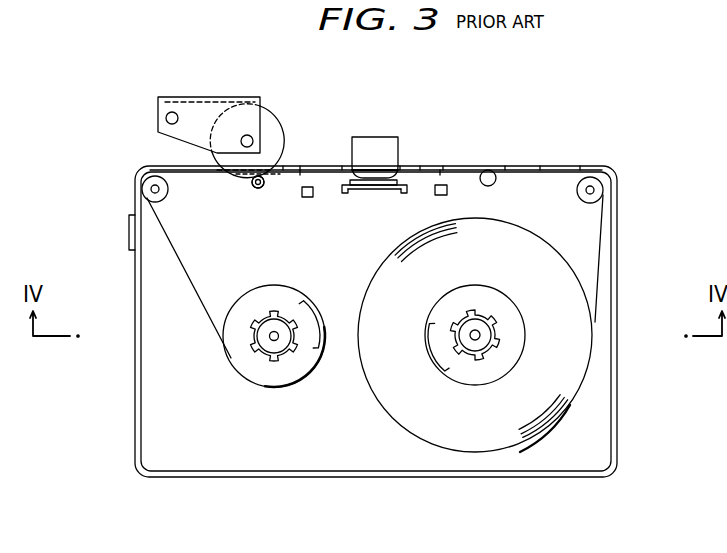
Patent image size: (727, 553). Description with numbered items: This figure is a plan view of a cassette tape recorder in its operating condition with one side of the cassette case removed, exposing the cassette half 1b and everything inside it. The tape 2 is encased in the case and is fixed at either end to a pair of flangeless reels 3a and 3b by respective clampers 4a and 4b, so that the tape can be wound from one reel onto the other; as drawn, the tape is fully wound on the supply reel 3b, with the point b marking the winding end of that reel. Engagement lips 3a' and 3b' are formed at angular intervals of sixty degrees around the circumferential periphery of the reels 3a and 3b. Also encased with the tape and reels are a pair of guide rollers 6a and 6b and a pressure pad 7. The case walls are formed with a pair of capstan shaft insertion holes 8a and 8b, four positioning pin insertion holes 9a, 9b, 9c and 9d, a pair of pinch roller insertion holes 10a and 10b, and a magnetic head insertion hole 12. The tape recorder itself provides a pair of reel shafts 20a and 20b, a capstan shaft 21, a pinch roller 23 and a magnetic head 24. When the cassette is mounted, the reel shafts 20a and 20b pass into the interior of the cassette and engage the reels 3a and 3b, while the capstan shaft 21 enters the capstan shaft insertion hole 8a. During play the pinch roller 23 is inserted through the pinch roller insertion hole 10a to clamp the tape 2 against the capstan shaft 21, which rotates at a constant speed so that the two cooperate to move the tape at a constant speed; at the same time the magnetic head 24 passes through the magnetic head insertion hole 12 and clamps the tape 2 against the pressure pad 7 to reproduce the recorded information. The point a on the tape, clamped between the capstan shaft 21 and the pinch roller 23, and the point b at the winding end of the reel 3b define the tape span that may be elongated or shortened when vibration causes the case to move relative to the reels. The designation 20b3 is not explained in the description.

The tape 2 is at (557, 173).
The cassette half 1b is at (135, 297).
The pinch roller insertion hole 10a is at (281, 167).
The pinch roller insertion hole 10b is at (507, 167).
The magnetic head insertion hole 12 is at (407, 165).
The guide roller 6a is at (143, 187).
The guide roller 6b is at (600, 181).
The pinch roller 23 is at (272, 127).
The capstan shaft 21 is at (256, 189).
The capstan shaft insertion hole 8a is at (250, 184).
The capstan shaft insertion hole 8b is at (493, 185).
The point on the tape a is at (247, 181).
The positioning pin insertion hole 9a is at (308, 198).
The positioning pin insertion hole 9b is at (446, 196).
The positioning pin insertion hole 9c is at (302, 172).
The positioning pin insertion hole 9d is at (438, 182).
The magnetic head 24 is at (377, 137).
The pressure pad 7 is at (372, 189).
The reel 3a is at (274, 359).
The reel shaft 20a is at (284, 312).
The engagement lips 3a' is at (212, 355).
The clamper 4a is at (311, 305).
The supply reel 3b is at (470, 335).
The reel shaft 20b is at (482, 335).
The reel hub engaging portion 20b3 is at (494, 311).
The engagement lips 3b' is at (496, 431).
The clamper 4b is at (428, 324).
The point at the winding end b is at (595, 338).